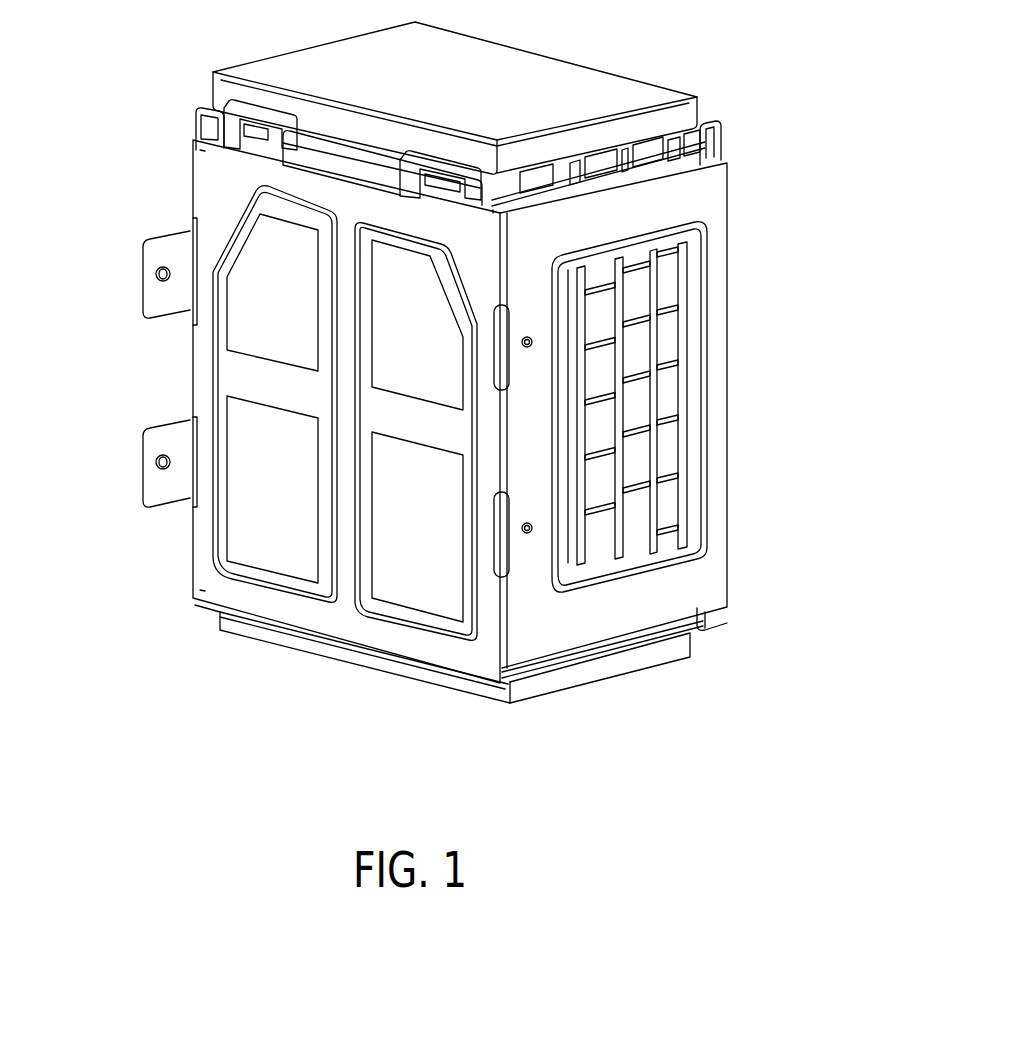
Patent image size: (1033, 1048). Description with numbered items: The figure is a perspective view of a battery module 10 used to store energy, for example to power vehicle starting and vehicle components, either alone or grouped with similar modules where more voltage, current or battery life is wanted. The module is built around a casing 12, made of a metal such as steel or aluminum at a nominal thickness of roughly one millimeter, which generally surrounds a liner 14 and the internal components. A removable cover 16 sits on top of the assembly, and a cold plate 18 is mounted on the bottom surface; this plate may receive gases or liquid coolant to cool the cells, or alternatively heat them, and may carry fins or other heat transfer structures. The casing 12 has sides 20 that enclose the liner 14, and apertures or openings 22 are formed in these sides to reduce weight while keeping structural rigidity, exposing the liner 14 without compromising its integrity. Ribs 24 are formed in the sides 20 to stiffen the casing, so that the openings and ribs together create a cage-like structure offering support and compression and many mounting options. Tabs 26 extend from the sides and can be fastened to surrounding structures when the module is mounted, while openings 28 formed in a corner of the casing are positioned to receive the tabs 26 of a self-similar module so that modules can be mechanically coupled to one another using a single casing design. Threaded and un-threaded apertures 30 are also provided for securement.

The battery module 10 is at (771, 58).
The casing 12 is at (207, 592).
The liner 14 is at (247, 527).
The cover 16 is at (557, 58).
The cold plate 18 is at (588, 670).
The sides 20 is at (207, 178).
The apertures or openings 22 is at (403, 352).
The ribs 24 is at (347, 520).
The tabs 26 is at (143, 283).
The openings 28 is at (505, 385).
The apertures for securement 30 is at (163, 272).